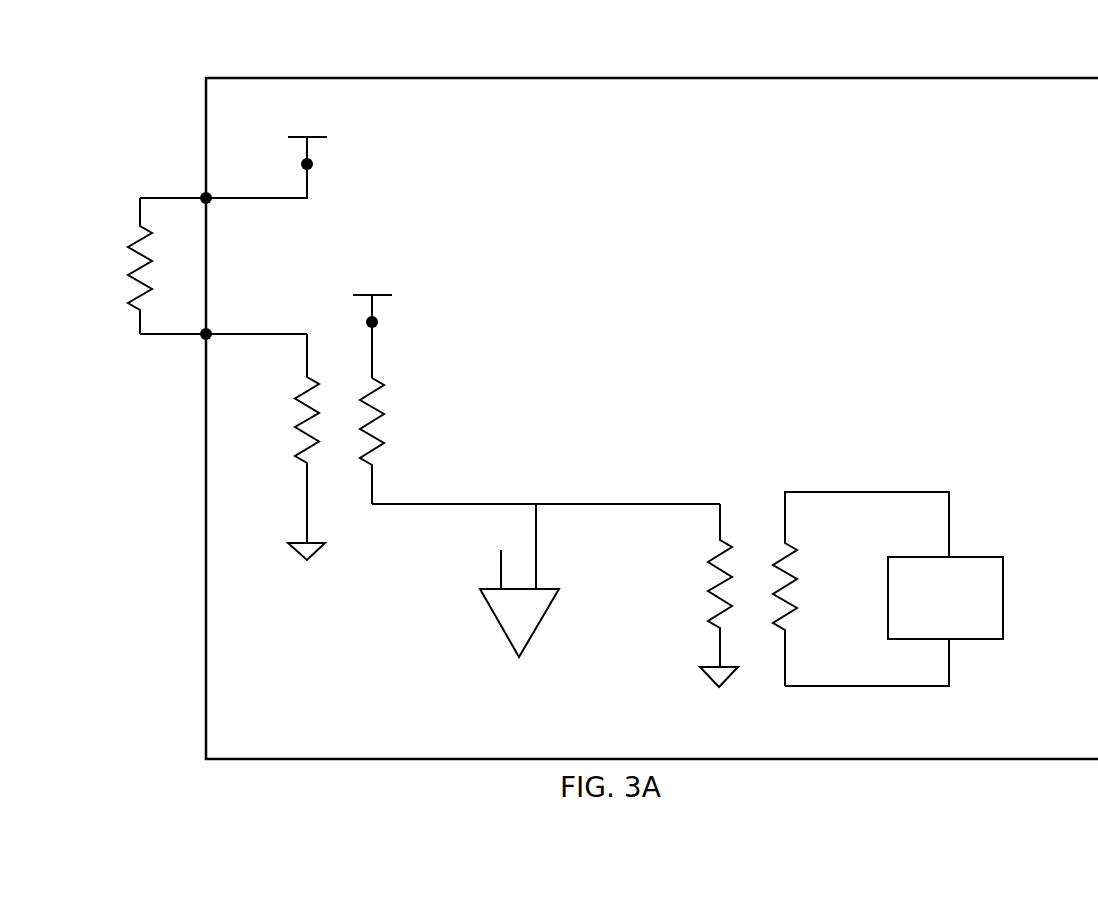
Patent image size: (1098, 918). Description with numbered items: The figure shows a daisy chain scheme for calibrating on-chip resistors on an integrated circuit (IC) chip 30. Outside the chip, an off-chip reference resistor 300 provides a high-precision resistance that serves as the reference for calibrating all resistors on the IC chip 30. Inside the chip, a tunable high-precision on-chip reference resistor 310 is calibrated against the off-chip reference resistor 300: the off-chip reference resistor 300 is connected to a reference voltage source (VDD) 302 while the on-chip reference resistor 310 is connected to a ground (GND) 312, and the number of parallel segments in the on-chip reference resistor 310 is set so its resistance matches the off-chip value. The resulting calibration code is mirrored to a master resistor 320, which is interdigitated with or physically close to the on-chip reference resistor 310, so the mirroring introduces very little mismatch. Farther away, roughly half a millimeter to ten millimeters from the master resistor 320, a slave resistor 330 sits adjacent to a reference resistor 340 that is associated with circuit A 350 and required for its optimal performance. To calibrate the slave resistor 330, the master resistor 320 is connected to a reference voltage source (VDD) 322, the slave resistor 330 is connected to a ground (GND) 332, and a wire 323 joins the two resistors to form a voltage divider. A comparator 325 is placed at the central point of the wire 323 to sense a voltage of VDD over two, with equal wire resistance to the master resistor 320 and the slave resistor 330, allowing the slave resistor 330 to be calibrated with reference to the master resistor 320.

The integrated circuit (IC) chip 30 is at (890, 78).
The off-chip reference resistor R_off_ref 300 is at (142, 236).
The reference voltage source (VDD) 302 is at (330, 125).
The on-chip reference resistor R_on_ref 310 is at (316, 383).
The ground (GND) 312 is at (330, 575).
The master resistor R_m_1 320 is at (384, 380).
The reference voltage source (VDD) 322 is at (394, 283).
The wire 323 is at (482, 504).
The comparator 325 is at (502, 633).
The slave resistor R_s_1 330 is at (712, 555).
The ground (GND) 332 is at (703, 669).
The reference resistor R_ref_a 340 is at (786, 547).
The circuit A 350 is at (1003, 593).